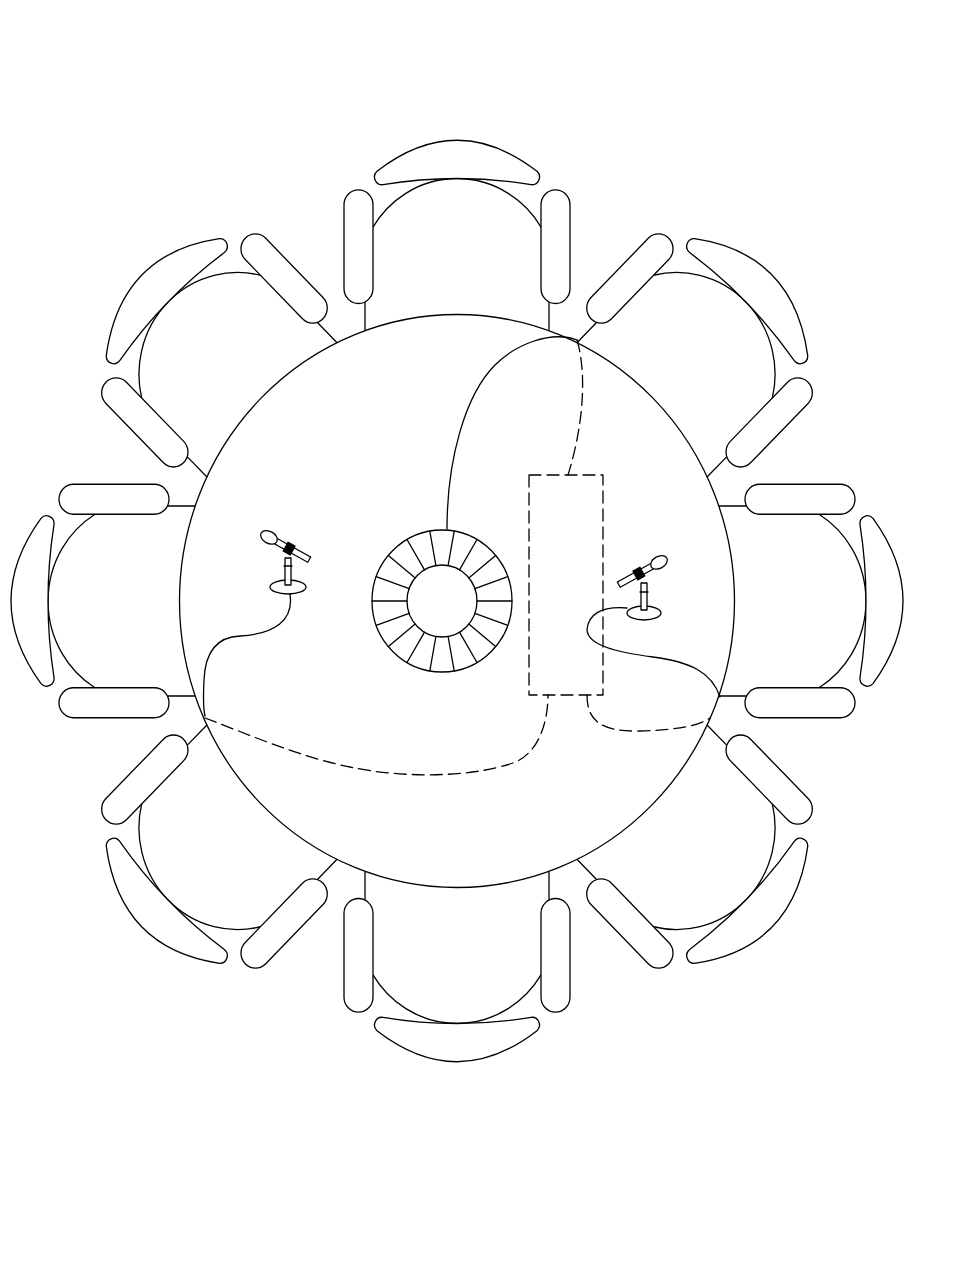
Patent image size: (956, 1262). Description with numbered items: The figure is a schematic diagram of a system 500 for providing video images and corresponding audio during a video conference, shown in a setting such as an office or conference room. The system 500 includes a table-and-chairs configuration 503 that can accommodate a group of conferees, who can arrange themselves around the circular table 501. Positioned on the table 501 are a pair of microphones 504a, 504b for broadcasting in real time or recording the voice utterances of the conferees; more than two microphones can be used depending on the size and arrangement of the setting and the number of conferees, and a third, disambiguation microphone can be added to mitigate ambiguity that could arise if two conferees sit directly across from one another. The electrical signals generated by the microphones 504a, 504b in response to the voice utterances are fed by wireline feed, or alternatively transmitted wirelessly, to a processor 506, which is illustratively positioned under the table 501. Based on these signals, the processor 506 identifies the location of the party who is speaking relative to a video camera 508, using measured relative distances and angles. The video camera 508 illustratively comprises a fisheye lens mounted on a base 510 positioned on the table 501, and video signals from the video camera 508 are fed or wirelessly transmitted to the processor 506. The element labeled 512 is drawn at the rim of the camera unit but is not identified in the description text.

The system 500 is at (807, 44).
The table 501 is at (457, 601).
The table-and-chairs configuration 503 is at (99, 238).
The microphone 504a is at (280, 572).
The microphone 504b is at (650, 591).
The processor 506 is at (457, 557).
The video camera 508 is at (470, 669).
The base 510 is at (418, 602).
The ring housing 512 is at (374, 606).